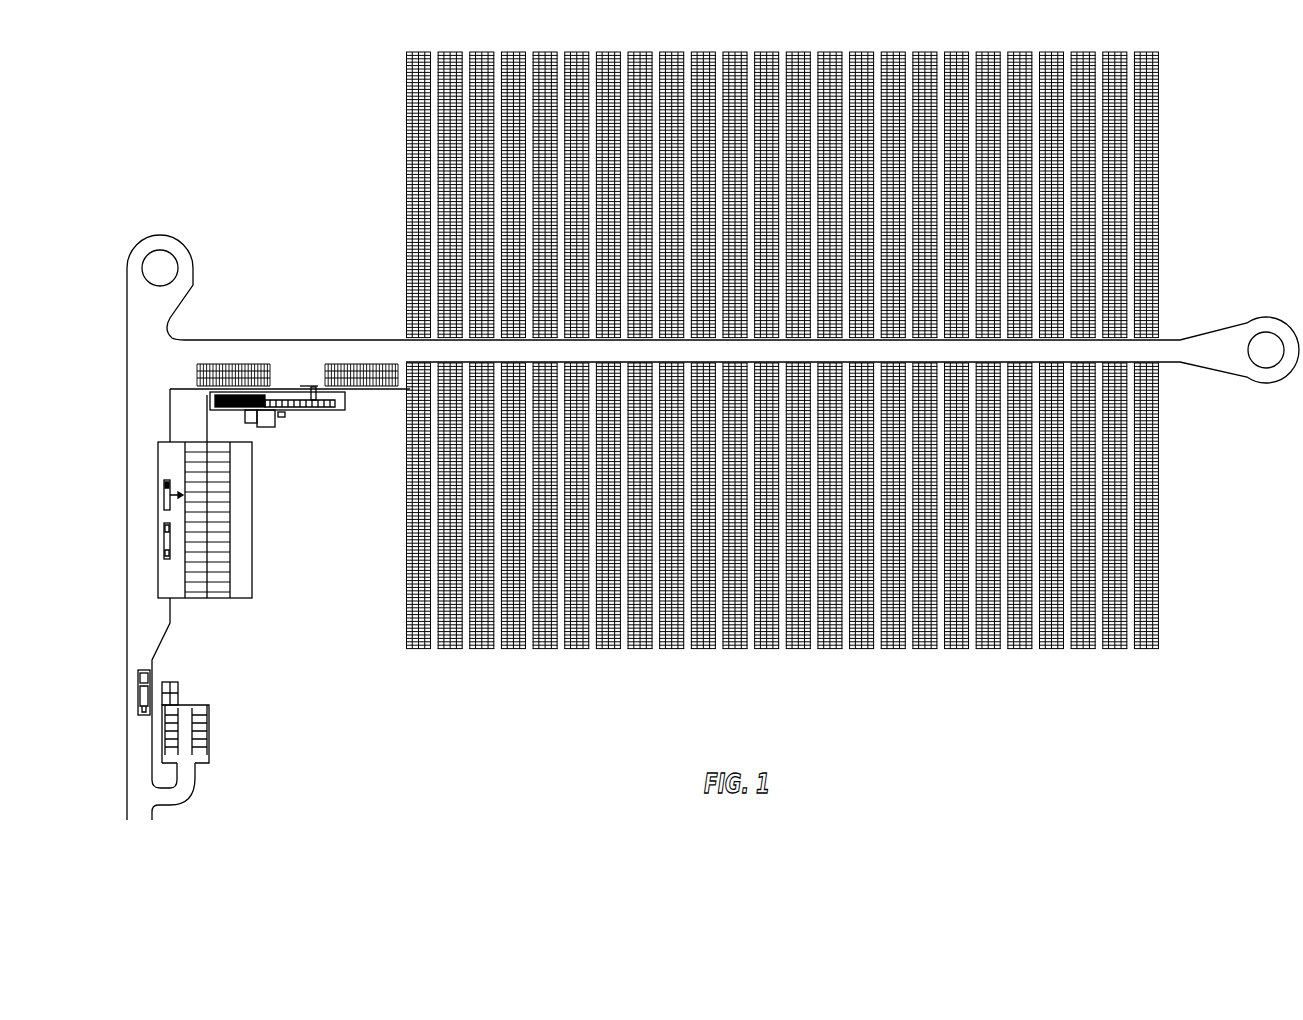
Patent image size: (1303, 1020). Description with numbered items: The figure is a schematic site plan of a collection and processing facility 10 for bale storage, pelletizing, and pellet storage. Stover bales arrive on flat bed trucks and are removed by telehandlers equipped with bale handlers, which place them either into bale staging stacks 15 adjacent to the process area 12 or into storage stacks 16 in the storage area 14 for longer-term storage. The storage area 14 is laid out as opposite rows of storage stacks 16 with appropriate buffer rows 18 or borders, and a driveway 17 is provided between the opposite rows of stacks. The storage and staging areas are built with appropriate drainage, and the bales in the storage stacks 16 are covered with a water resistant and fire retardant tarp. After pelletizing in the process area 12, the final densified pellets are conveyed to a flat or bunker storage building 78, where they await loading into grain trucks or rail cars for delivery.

The collection and processing facility 10 is at (188, 82).
The process area 12 is at (308, 438).
The storage area 14 is at (332, 163).
The bale staging stacks 15 is at (352, 366).
The storage stacks 16 is at (893, 649).
The driveway 17 is at (400, 338).
The buffer rows 18 is at (1040, 649).
The bunker storage building 78 is at (250, 600).